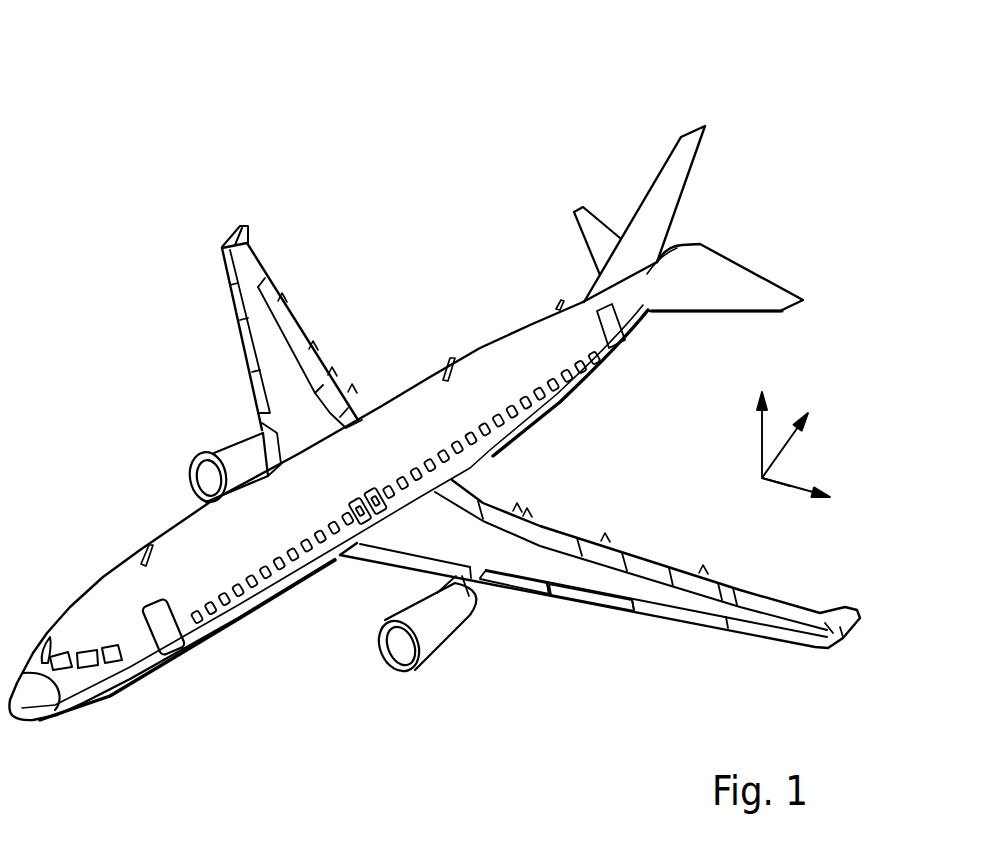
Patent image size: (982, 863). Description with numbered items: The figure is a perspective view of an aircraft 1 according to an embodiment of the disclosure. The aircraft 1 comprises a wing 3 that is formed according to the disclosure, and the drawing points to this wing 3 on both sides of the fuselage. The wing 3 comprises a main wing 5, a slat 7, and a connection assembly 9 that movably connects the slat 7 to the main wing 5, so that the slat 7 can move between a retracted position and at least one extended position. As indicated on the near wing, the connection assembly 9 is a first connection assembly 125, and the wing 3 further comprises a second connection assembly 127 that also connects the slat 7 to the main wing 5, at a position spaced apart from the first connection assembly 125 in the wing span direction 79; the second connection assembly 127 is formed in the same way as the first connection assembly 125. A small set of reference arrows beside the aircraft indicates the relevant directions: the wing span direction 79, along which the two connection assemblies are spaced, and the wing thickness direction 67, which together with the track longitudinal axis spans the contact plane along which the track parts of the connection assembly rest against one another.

The aircraft 1 is at (434, 374).
The wing 3 is at (541, 458).
The main wing 5 is at (548, 572).
The slat 7 is at (592, 598).
The connection assembly 9 is at (599, 650).
The first connection assembly 125 is at (545, 600).
The second connection assembly 127 is at (637, 620).
The wing thickness direction 67 is at (763, 427).
The wing span direction 79 is at (788, 487).